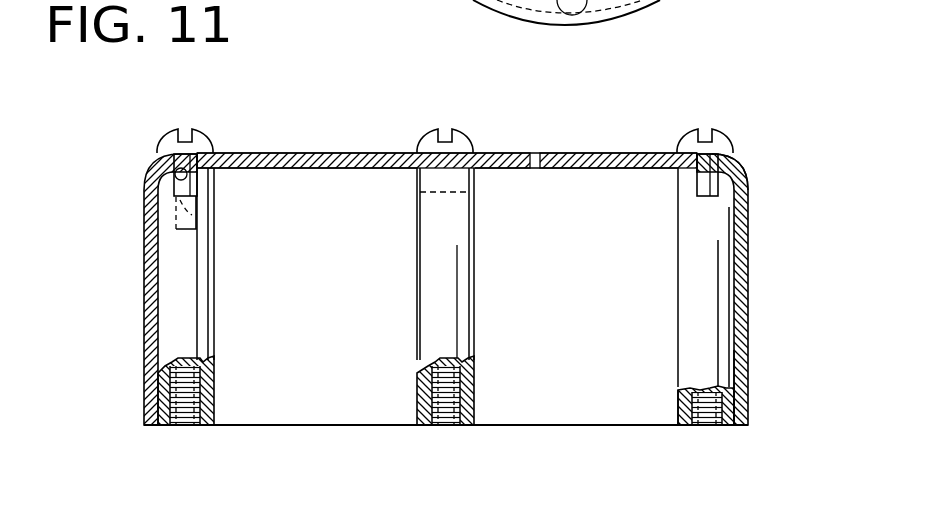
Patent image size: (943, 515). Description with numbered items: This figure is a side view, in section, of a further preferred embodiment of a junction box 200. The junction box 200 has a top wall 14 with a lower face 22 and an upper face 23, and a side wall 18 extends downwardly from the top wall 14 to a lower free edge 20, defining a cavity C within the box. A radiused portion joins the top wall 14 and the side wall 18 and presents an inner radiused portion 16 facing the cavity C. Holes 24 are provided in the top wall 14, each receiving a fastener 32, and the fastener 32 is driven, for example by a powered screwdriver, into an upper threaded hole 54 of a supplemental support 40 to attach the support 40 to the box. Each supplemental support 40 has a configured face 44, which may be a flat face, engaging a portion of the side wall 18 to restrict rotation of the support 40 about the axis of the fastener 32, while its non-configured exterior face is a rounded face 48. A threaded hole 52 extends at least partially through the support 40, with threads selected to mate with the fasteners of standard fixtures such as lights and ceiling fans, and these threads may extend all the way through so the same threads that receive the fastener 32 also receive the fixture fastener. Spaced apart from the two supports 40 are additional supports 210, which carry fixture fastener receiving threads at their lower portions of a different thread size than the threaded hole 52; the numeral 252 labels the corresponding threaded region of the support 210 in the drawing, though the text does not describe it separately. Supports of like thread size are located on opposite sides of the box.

The top wall 14 is at (591, 145).
The lower face 22 is at (275, 153).
The upper face 23 is at (375, 152).
The fastener 32 is at (155, 126).
The hole 24 is at (150, 177).
The upper threaded hole 54 is at (176, 232).
The junction box 200 is at (760, 236).
The side wall 18 is at (750, 304).
The configured face 44 is at (750, 363).
The inner radiused portion 16 is at (737, 181).
The supplemental support 40 is at (222, 293).
The additional support 210 is at (483, 302).
The threaded hole 52 is at (185, 425).
The central threaded bracket 252 is at (460, 407).
The rounded face 48 is at (678, 393).
The lower free edge 20 is at (740, 427).
The cavity C is at (305, 445).